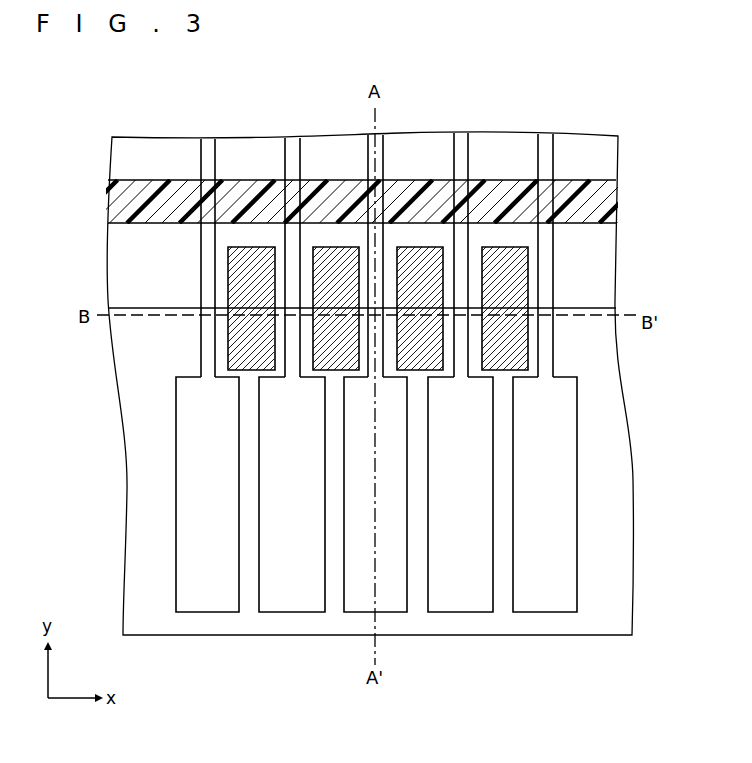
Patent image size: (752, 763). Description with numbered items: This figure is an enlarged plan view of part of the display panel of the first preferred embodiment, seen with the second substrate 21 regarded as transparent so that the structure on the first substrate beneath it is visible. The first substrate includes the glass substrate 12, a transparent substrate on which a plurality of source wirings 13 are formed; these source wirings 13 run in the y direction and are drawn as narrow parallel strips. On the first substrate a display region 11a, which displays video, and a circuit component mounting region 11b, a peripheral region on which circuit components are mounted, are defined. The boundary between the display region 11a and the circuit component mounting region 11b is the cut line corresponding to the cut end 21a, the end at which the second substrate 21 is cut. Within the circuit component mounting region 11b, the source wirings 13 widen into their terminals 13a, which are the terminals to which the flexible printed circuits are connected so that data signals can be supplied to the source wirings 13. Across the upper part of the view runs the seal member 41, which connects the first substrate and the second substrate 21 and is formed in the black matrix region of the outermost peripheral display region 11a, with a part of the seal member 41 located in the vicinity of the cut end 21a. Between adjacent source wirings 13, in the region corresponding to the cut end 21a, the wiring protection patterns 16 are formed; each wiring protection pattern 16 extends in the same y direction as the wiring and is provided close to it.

The seal member 41 is at (605, 206).
The source wirings 13 is at (555, 247).
The terminals of the source wirings 13a is at (578, 449).
The wiring protection pattern 16 is at (540, 353).
The display region 11a is at (578, 276).
The circuit component mounting region 11b is at (597, 408).
The second substrate 21 is at (147, 293).
The cut end 21a is at (590, 312).
The glass substrate 12 is at (505, 635).